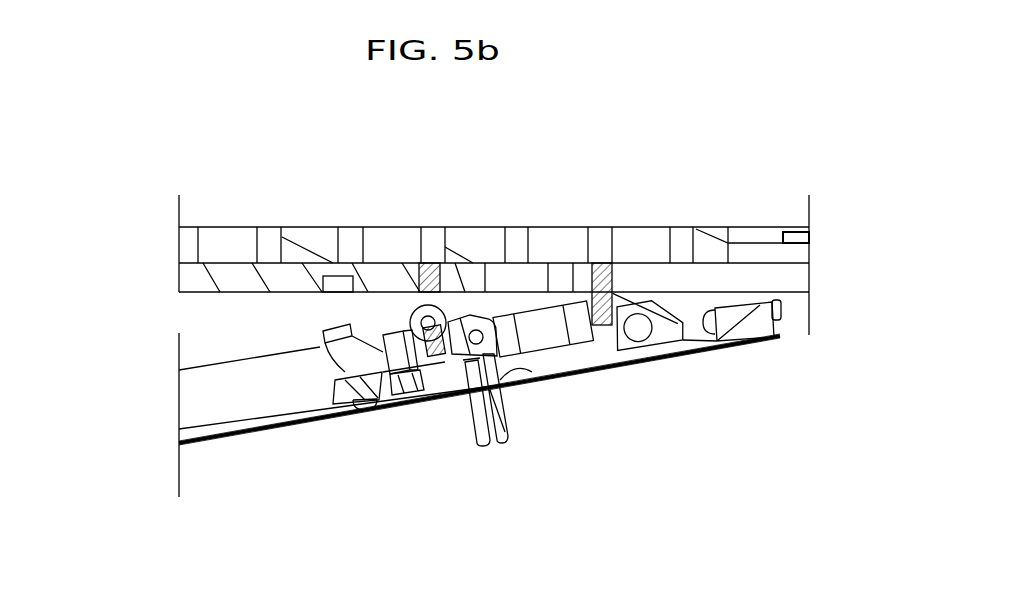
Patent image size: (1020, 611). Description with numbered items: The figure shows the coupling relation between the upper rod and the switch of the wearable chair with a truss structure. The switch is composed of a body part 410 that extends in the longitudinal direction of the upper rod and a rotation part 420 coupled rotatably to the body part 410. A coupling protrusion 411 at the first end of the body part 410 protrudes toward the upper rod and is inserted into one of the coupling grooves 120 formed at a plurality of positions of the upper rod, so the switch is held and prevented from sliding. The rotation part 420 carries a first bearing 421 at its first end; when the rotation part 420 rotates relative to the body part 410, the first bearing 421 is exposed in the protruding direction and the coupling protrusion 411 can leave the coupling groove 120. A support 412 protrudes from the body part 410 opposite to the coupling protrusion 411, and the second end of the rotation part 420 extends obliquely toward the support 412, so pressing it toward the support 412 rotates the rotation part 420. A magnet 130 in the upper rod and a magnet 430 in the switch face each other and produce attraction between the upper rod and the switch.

The coupling groove 120 is at (330, 276).
The magnet 130 is at (600, 263).
The body part 410 is at (600, 352).
The coupling protrusion 411 is at (345, 329).
The support 412 is at (483, 447).
The rotation part 420 is at (497, 365).
The first bearing 421 is at (410, 330).
The magnet 430 is at (655, 360).